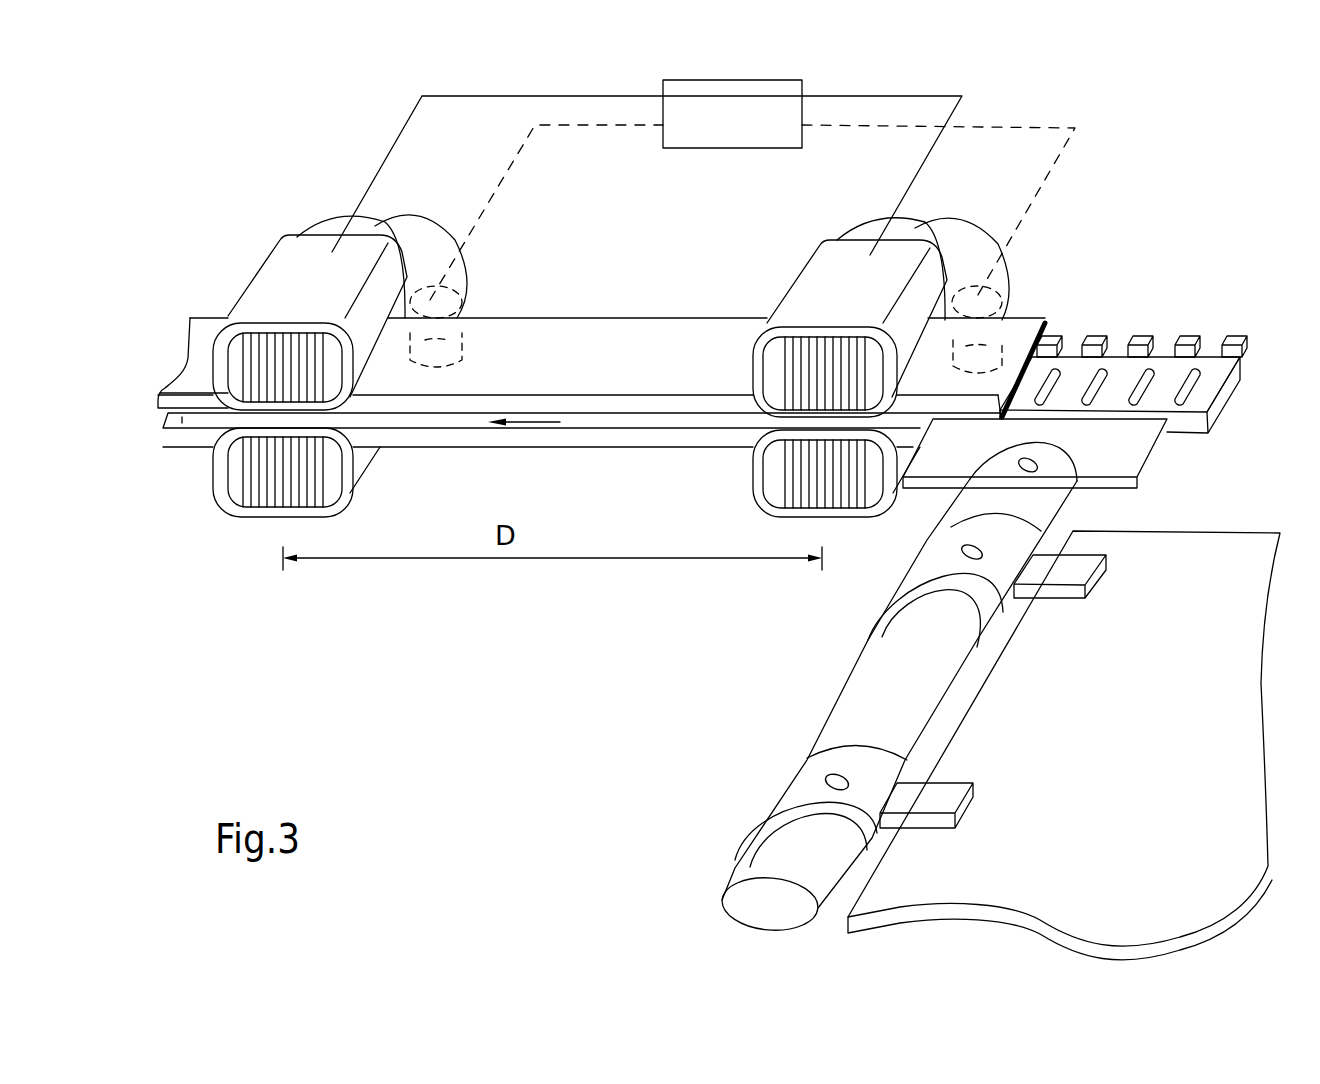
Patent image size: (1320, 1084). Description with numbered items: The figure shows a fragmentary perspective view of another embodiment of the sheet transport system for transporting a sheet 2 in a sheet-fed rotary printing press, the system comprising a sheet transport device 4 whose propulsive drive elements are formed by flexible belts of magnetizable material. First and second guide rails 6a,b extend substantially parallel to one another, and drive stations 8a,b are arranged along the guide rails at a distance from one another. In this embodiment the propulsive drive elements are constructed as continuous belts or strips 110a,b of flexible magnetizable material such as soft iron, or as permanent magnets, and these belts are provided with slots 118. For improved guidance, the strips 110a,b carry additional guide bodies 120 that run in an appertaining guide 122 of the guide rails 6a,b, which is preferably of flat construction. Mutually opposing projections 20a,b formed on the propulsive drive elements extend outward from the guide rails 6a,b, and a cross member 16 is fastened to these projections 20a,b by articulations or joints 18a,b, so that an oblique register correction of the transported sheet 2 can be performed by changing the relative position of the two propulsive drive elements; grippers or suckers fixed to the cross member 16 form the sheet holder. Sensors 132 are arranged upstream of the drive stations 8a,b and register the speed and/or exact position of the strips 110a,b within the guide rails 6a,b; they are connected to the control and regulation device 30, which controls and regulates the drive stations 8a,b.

The sheet 2 is at (1128, 768).
The sheet transport device 4 is at (750, 763).
The first and second guide rails 6a,b is at (571, 350).
The drive stations 8a,b is at (288, 258).
The cross member 16 is at (907, 683).
The articulations or joints 18a,b is at (1037, 468).
The projections 20a,b is at (1127, 448).
The control and regulation device 30 is at (752, 132).
The strips of flexible magnetizable material 110a,b is at (1144, 327).
The slots 118 is at (1125, 368).
The guide bodies 120 is at (1230, 338).
The guide 122 is at (1045, 332).
The sensors 132 is at (427, 295).